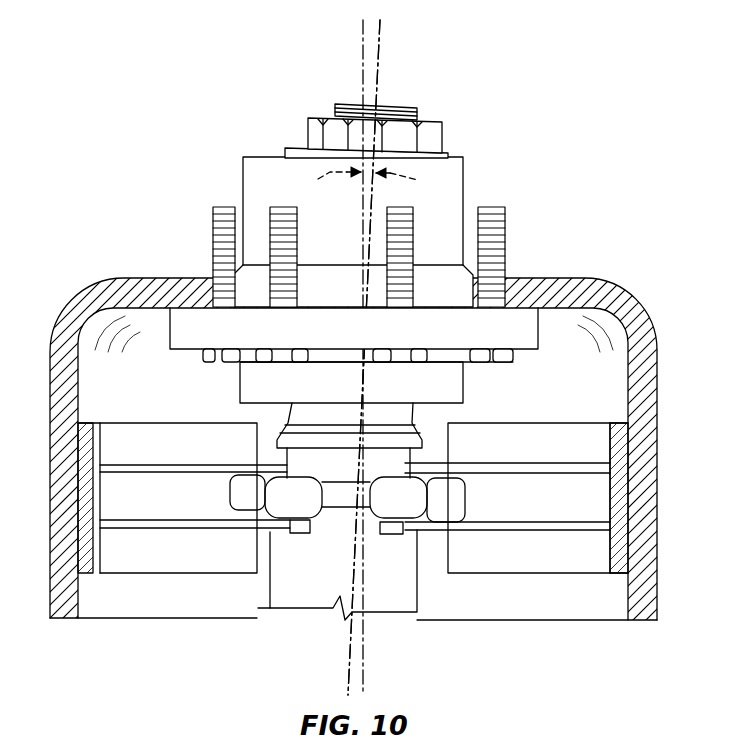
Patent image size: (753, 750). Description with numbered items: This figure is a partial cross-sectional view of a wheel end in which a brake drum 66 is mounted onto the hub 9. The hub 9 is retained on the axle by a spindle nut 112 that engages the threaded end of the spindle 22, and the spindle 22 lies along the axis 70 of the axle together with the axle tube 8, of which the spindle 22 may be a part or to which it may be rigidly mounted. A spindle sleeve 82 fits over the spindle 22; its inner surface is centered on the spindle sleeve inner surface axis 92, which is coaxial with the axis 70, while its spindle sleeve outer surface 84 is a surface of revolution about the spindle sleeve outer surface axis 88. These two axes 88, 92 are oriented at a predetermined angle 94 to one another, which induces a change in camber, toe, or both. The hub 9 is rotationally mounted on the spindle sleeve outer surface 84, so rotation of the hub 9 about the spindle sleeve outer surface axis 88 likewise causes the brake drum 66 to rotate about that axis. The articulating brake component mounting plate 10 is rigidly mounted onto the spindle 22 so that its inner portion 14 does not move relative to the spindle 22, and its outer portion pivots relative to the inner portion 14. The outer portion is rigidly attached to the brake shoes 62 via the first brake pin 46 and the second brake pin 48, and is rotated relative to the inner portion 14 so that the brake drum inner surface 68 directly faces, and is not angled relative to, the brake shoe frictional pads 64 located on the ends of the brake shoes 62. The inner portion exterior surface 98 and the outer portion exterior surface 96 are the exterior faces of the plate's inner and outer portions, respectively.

The axle tube 8 is at (275, 580).
The hub 9 is at (452, 188).
The articulating brake component mounting plate 10 is at (250, 497).
The inner portion 14 is at (455, 505).
The spindle 22 is at (398, 110).
The first brake pin 46 is at (296, 535).
The second brake pin 48 is at (396, 540).
The brake shoes 62 is at (462, 562).
The brake shoe frictional pads 64 is at (85, 538).
The brake drum 66 is at (645, 400).
The brake drum inner surface 68 is at (623, 438).
The axis 70 is at (380, 58).
The spindle sleeve inner surface axis 92 is at (364, 357).
The spindle sleeve 82 is at (390, 415).
The spindle sleeve outer surface 84 is at (328, 416).
The spindle sleeve outer surface axis 88 is at (363, 80).
The angle 94 is at (335, 176).
The outer portion exterior surface 96 is at (347, 494).
The inner portion exterior surface 98 is at (450, 495).
The spindle nut 112 is at (438, 136).